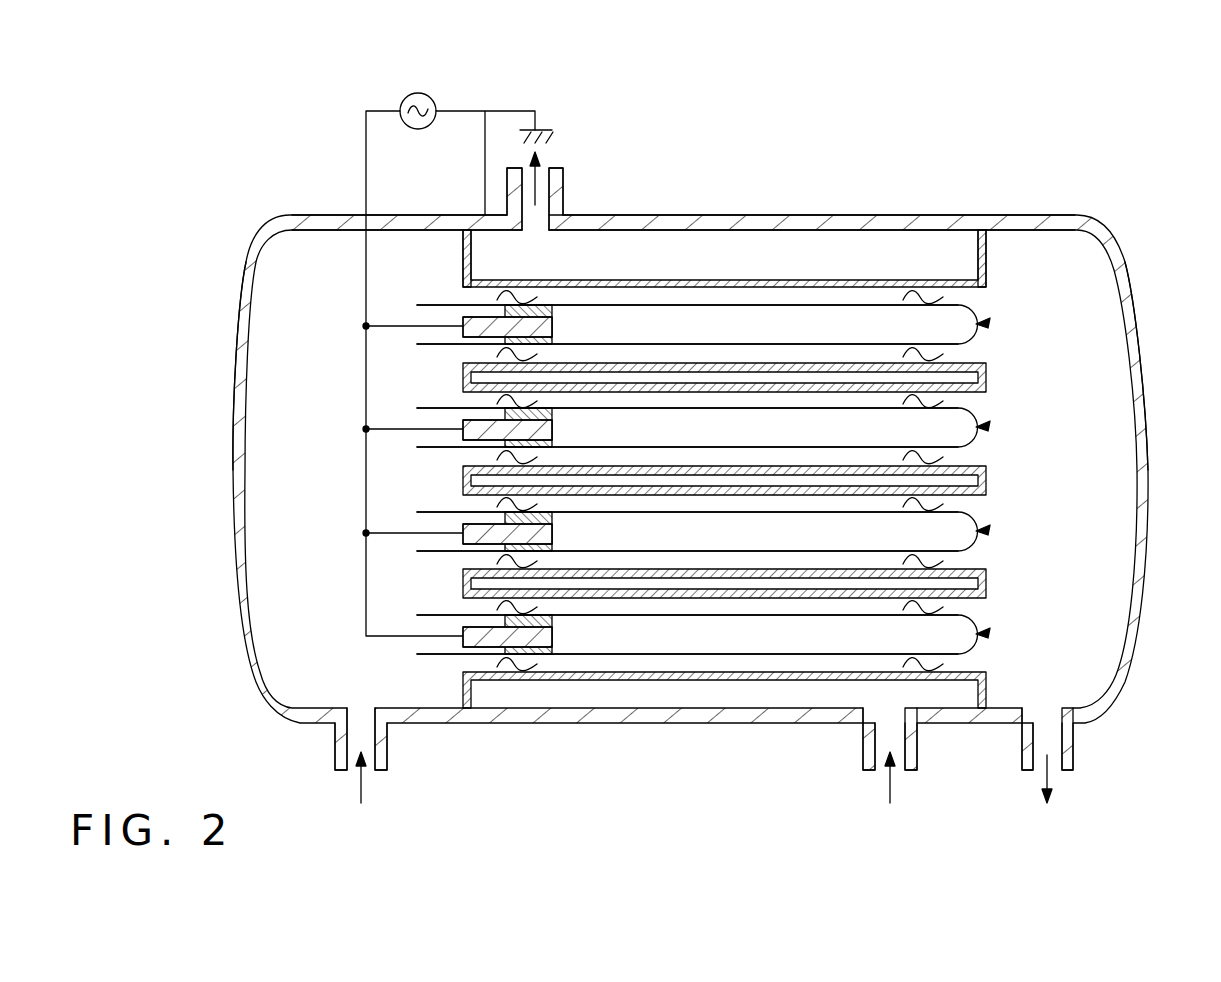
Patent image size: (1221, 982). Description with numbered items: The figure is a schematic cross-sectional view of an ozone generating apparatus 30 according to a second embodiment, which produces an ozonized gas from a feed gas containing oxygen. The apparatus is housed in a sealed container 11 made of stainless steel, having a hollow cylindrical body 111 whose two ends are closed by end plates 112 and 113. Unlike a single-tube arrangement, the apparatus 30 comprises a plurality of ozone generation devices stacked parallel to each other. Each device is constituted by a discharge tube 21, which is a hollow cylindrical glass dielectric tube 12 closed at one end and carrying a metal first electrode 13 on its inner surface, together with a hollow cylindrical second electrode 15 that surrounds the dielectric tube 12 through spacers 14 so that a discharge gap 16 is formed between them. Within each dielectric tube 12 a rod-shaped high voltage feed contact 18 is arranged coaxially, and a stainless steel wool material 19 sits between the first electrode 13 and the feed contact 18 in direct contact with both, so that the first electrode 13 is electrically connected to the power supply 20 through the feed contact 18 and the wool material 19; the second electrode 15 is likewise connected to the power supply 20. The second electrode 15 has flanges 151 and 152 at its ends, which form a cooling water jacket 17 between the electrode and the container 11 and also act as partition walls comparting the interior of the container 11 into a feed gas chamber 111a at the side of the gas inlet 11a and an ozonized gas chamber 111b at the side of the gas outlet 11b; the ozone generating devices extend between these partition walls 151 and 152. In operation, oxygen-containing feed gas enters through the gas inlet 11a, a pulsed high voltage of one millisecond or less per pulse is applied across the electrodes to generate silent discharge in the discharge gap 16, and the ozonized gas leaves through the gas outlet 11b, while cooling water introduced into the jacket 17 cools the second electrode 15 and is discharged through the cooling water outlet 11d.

The ozone generating apparatus 30 is at (686, 430).
The sealed container 11 is at (686, 477).
The hollow cylindrical body 111 is at (940, 215).
The feed gas chamber 111a is at (268, 345).
The ozonized gas chamber 111b is at (1105, 397).
The end plate 112 is at (233, 477).
The end plate 113 is at (1150, 474).
The gas inlet 11a is at (335, 755).
The gas outlet 11b is at (1073, 755).
The cooling water outlet 11d is at (567, 183).
The dielectric tube 12 is at (960, 305).
The first electrode 13 is at (795, 343).
The spacer 14 is at (508, 665).
The second electrode 15 is at (952, 357).
The discharge gap 16 is at (739, 295).
The cooling water jacket 17 is at (868, 245).
The feed contact 18 is at (553, 330).
The stainless steel wool material 19 is at (552, 312).
The power supply 20 is at (406, 98).
The discharge tube 21 is at (989, 324).
The flange 151 is at (463, 262).
The flange 152 is at (990, 262).